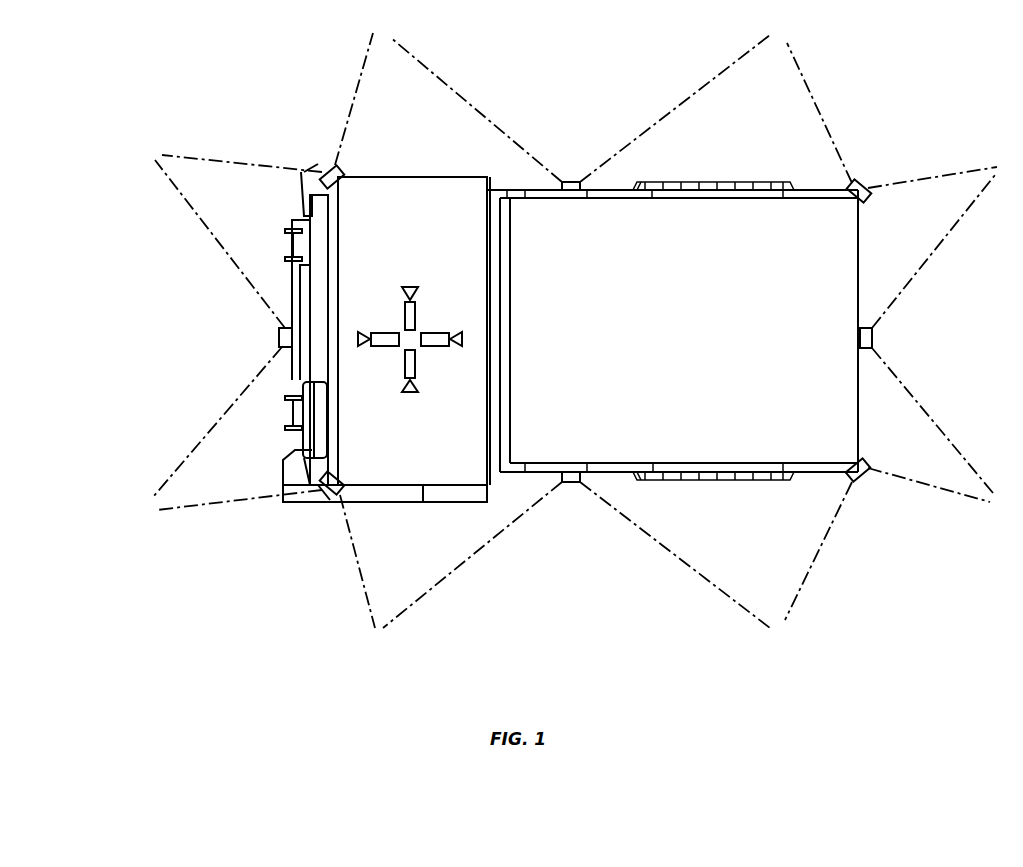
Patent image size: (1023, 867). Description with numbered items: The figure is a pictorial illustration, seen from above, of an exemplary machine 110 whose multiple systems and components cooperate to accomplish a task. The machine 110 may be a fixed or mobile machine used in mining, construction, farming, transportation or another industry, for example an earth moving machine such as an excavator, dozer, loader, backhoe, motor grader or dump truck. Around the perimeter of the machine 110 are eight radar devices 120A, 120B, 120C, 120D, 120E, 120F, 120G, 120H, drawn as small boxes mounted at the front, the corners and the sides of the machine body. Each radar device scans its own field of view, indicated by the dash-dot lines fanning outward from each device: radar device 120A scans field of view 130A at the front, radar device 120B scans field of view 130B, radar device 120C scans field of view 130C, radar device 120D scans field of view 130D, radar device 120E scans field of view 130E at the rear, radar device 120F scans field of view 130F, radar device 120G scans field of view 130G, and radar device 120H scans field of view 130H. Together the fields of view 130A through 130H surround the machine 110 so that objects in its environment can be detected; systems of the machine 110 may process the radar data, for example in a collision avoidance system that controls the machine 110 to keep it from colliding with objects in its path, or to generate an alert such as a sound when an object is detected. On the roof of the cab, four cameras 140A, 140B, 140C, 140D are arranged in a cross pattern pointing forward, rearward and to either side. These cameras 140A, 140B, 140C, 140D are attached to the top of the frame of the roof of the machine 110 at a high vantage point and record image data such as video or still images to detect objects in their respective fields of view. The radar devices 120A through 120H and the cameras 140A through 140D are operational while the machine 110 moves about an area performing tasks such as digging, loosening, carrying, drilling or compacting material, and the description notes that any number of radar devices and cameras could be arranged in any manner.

The machine 110 is at (606, 336).
The radar device 120A is at (283, 328).
The radar device 120B is at (343, 173).
The radar device 120C is at (562, 184).
The radar device 120D is at (850, 185).
The radar device 120E is at (868, 328).
The radar device 120F is at (866, 466).
The radar device 120G is at (582, 477).
The radar device 120H is at (343, 495).
The field of view 130A is at (200, 230).
The field of view 130B is at (346, 117).
The field of view 130C is at (465, 100).
The field of view 130D is at (820, 100).
The field of view 130E is at (950, 230).
The field of view 130F is at (955, 500).
The field of view 130G is at (676, 565).
The field of view 130H is at (360, 588).
The camera 140A is at (378, 348).
The camera 140B is at (404, 298).
The camera 140C is at (435, 332).
The camera 140D is at (415, 364).